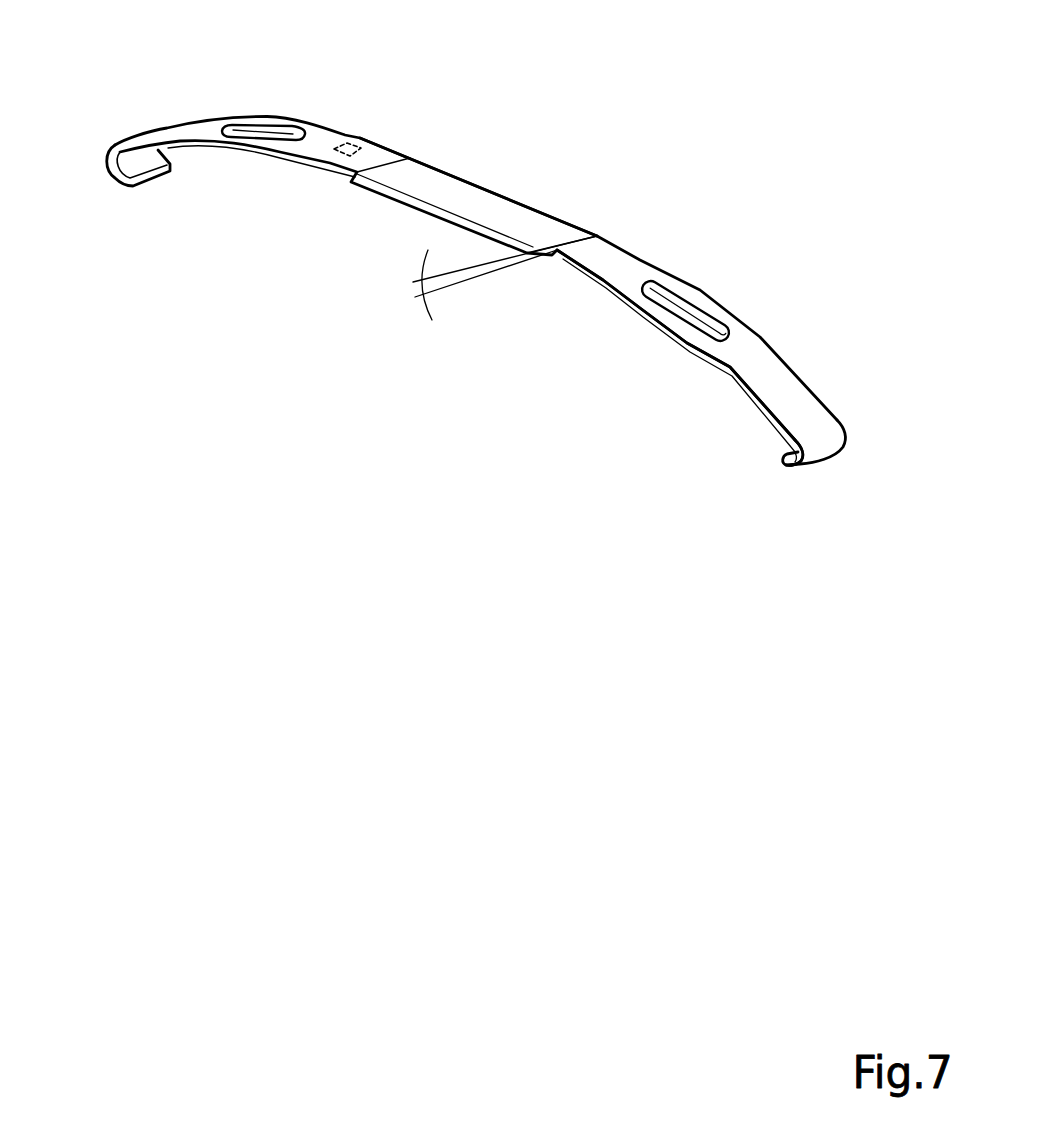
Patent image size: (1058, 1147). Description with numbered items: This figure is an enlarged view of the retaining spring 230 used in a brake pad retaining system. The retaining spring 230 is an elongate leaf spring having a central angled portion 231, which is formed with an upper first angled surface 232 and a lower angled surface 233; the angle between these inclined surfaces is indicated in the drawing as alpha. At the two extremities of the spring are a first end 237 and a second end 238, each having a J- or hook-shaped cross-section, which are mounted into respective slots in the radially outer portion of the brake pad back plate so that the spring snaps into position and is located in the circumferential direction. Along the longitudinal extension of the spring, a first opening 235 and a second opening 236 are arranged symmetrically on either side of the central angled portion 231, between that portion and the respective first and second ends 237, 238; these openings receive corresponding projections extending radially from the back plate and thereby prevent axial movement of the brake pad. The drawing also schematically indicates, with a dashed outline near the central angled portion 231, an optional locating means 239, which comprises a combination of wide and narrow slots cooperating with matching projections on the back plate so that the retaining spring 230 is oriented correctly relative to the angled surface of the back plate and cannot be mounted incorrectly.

The retaining spring 230 is at (740, 385).
The central angled portion 231 is at (517, 160).
The upper first angled surface 232 is at (550, 226).
The lower angled surface 233 is at (380, 207).
The first opening 235 is at (673, 311).
The second opening 236 is at (263, 132).
The first end 237 is at (788, 480).
The second end 238 is at (105, 175).
The locating means 239 is at (352, 147).
The bend angle alpha is at (490, 278).